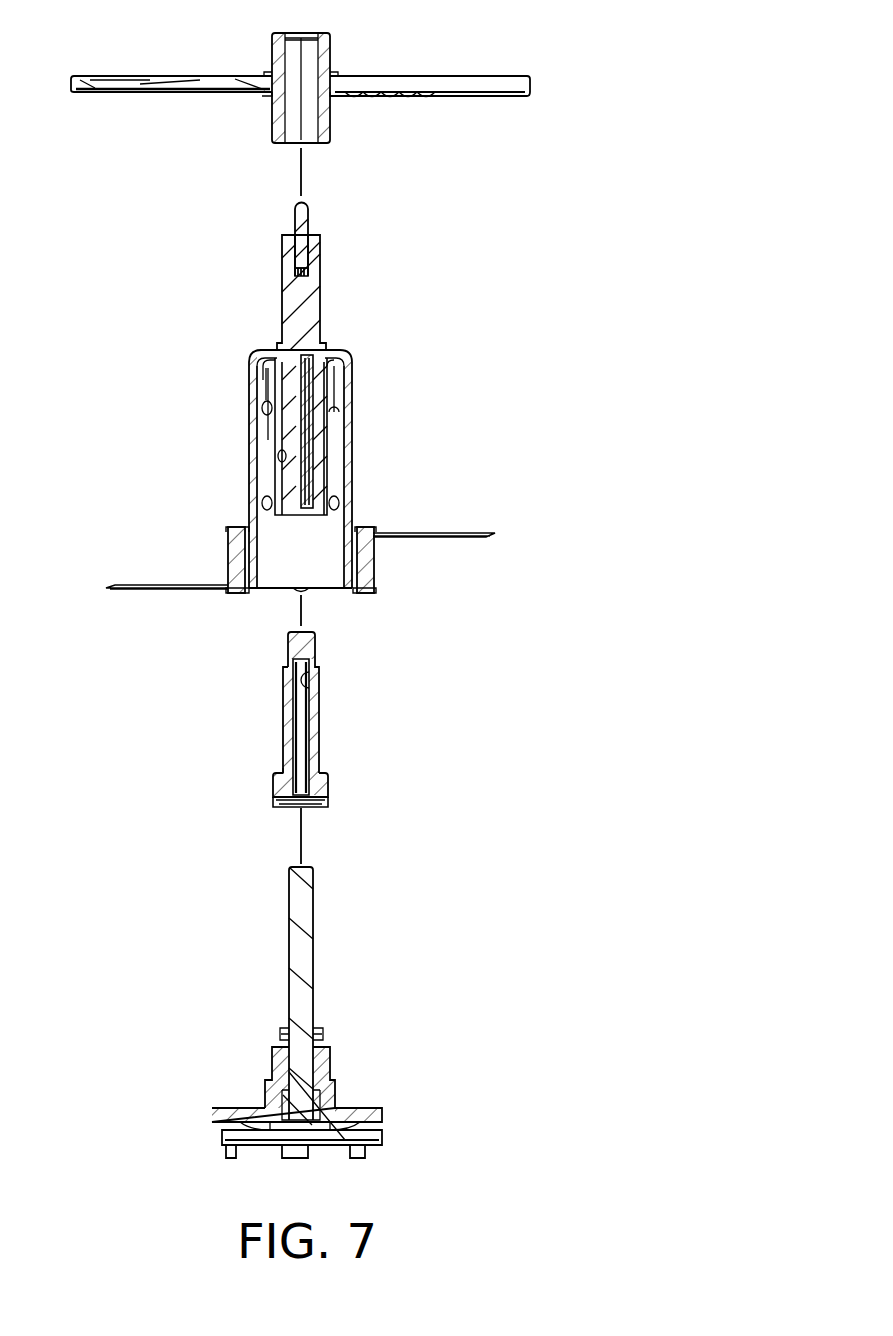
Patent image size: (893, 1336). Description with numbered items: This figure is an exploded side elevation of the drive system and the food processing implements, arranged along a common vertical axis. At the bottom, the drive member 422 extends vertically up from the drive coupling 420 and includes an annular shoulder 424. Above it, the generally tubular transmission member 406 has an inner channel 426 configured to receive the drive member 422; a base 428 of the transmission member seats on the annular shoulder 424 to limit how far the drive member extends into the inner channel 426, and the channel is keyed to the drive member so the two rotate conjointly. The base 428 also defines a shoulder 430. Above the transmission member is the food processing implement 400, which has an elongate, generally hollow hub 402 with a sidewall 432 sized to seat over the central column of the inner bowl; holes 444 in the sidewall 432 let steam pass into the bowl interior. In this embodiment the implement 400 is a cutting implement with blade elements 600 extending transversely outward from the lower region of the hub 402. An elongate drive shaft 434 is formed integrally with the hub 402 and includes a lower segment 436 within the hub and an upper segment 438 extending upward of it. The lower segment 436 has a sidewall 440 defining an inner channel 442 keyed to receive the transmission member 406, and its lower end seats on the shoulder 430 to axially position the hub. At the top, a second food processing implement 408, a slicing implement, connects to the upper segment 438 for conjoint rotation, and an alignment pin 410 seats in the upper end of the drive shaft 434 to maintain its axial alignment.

The second food processing implement 408 is at (468, 78).
The alignment pin 410 is at (307, 213).
The upper segment 438 is at (282, 248).
The drive shaft 434 is at (322, 300).
The hub 402 is at (345, 358).
The sidewall 432 is at (355, 500).
The lower segment 436 is at (324, 438).
The sidewall 440 is at (272, 437).
The inner channel 442 is at (280, 458).
The holes 444 is at (263, 405).
The food processing implement 400 is at (373, 568).
The blade elements 600 is at (145, 583).
The transmission member 406 is at (320, 722).
The inner channel 426 is at (308, 664).
The base 428 is at (330, 783).
The shoulder 430 is at (283, 776).
The drive member 422 is at (315, 912).
The annular shoulder 424 is at (323, 1036).
The drive coupling 420 is at (330, 1100).